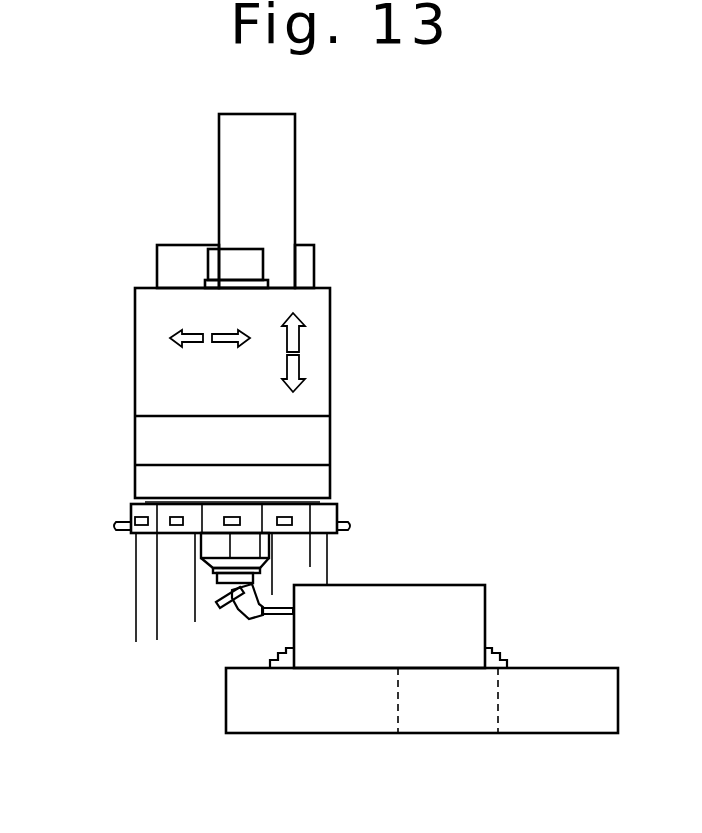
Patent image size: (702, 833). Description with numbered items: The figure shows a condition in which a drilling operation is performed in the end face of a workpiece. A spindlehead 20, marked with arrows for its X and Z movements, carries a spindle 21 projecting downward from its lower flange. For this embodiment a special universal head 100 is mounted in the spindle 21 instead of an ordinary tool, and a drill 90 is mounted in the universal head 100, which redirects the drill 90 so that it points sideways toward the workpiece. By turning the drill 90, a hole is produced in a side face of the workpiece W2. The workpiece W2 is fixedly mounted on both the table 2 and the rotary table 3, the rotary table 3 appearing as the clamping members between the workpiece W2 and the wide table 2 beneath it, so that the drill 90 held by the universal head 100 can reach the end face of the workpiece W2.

The spindlehead 20 is at (322, 385).
The spindle 21 is at (207, 549).
The universal head 100 is at (223, 590).
The drill 90 is at (277, 615).
The workpiece W2 is at (355, 658).
The rotary table 3 is at (458, 722).
The table 2 is at (575, 722).